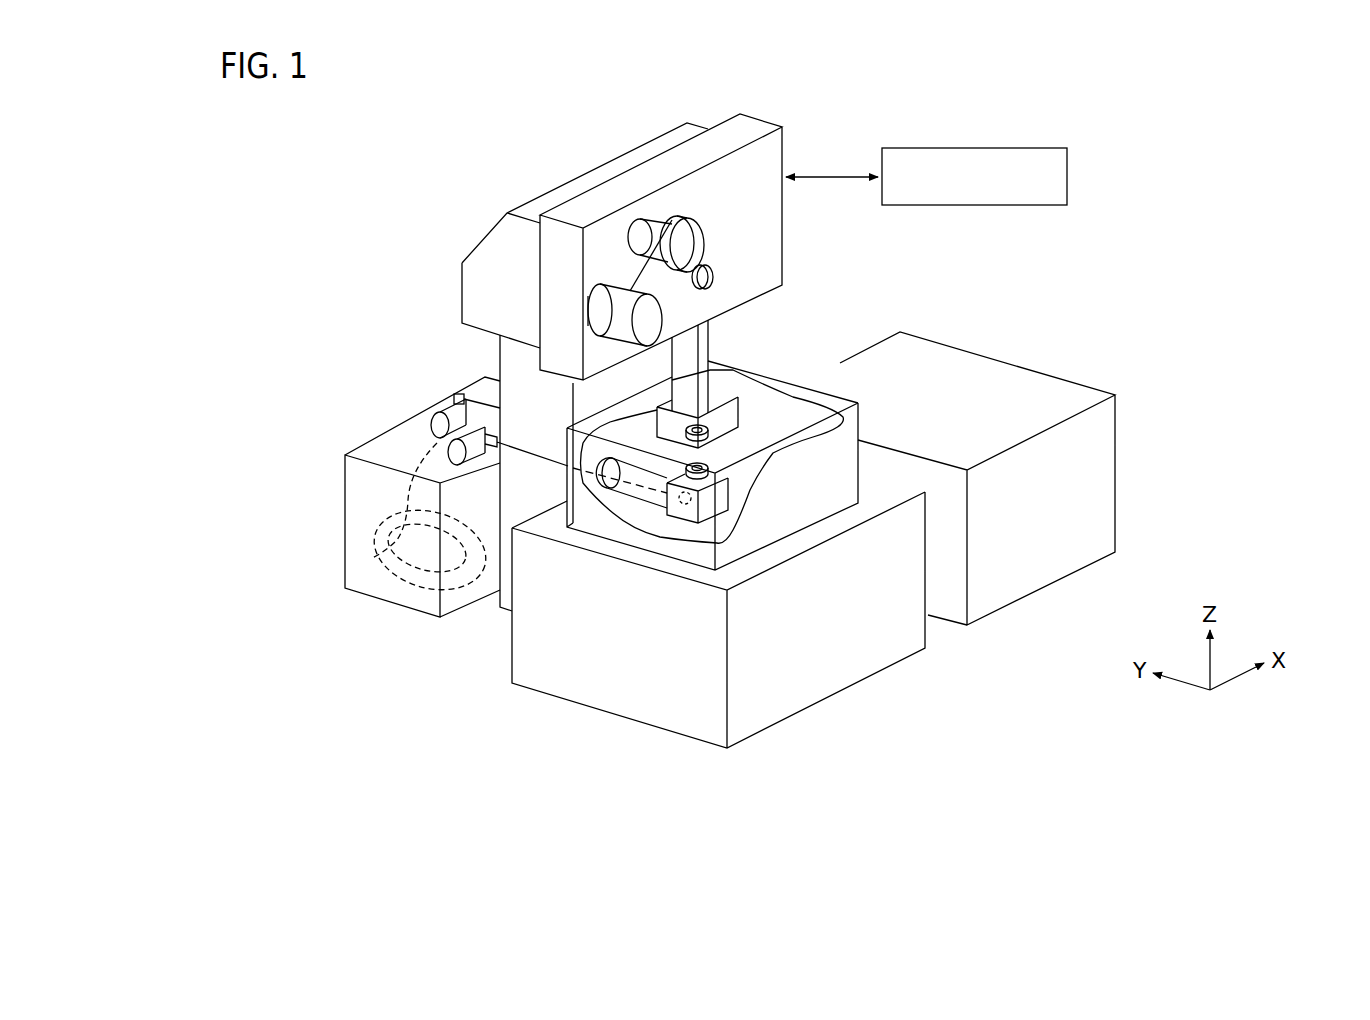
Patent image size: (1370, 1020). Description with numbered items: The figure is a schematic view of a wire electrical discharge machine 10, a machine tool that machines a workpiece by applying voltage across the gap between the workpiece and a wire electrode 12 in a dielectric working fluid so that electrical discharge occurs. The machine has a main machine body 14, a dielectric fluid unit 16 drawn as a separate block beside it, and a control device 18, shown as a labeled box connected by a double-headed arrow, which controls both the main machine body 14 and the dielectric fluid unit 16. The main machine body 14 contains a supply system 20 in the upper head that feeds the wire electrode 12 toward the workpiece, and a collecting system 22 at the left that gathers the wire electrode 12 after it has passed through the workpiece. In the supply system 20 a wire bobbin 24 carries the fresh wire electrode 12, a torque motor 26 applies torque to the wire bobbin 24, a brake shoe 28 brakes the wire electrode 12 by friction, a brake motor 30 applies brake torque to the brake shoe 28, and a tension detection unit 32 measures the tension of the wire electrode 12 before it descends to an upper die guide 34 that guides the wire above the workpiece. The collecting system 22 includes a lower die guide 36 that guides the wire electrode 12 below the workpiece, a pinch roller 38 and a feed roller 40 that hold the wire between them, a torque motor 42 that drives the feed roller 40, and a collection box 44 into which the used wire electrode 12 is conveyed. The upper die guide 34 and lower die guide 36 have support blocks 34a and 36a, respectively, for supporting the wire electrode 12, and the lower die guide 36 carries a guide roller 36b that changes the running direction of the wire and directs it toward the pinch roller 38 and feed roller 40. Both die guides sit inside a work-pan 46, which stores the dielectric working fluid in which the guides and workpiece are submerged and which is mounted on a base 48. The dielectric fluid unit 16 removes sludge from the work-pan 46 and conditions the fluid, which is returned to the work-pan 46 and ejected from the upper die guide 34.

The wire electrical discharge machine 10 is at (341, 179).
The wire electrode 12 is at (700, 305).
The main machine body 14 is at (460, 242).
The dielectric fluid unit 16 is at (1103, 461).
The control device 18 is at (1000, 148).
The supply system 20 is at (726, 227).
The collecting system 22 is at (425, 481).
The wire bobbin 24 is at (615, 292).
The torque motor 26 is at (587, 307).
The brake shoe 28 is at (688, 233).
The brake motor 30 is at (640, 230).
The tension detection unit 32 is at (713, 282).
The upper die guide 34 is at (715, 398).
The support block 34a is at (710, 428).
The lower die guide 36 is at (720, 498).
The support block 36a is at (703, 466).
The guide roller 36b is at (681, 508).
The pinch roller 38 is at (463, 412).
The feed roller 40 is at (472, 455).
The torque motor 42 is at (490, 438).
The collection box 44 is at (357, 498).
The work-pan 46 is at (820, 395).
The base 48 is at (855, 665).